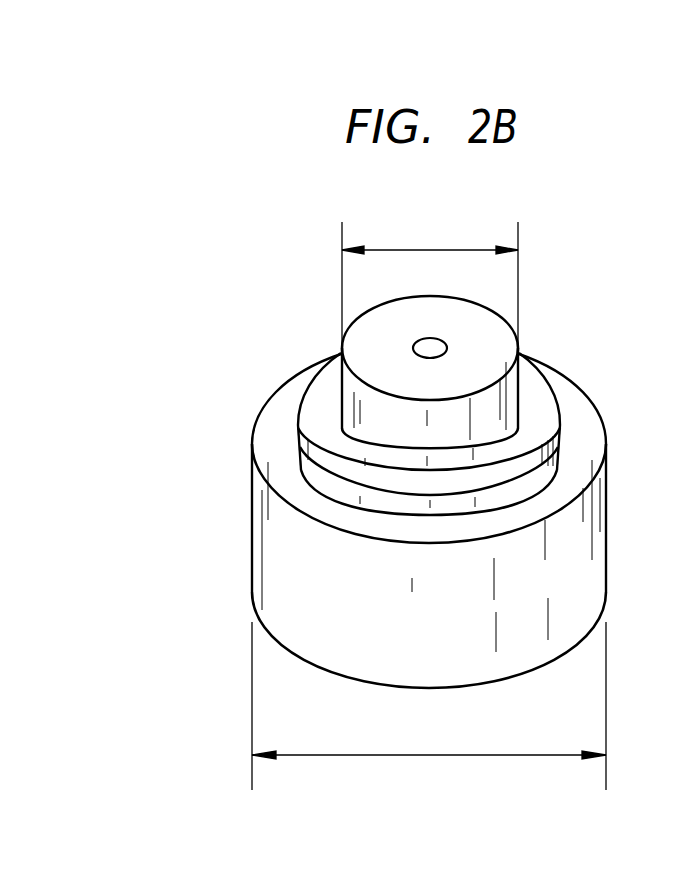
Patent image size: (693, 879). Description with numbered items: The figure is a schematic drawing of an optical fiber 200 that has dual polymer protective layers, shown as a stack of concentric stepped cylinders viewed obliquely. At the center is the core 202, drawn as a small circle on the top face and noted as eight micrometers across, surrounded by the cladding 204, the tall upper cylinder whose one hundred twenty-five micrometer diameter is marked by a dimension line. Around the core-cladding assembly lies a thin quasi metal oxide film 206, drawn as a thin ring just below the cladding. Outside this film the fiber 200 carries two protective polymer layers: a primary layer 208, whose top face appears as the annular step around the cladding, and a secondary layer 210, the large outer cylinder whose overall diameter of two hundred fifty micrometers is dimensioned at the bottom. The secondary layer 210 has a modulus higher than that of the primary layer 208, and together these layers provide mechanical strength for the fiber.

The fiber 200 is at (692, 228).
The core 202 is at (421, 343).
The cladding 204 is at (521, 386).
The thin quasi metal oxide film 206 is at (561, 414).
The primary layer 208 is at (318, 408).
The secondary layer 210 is at (282, 469).